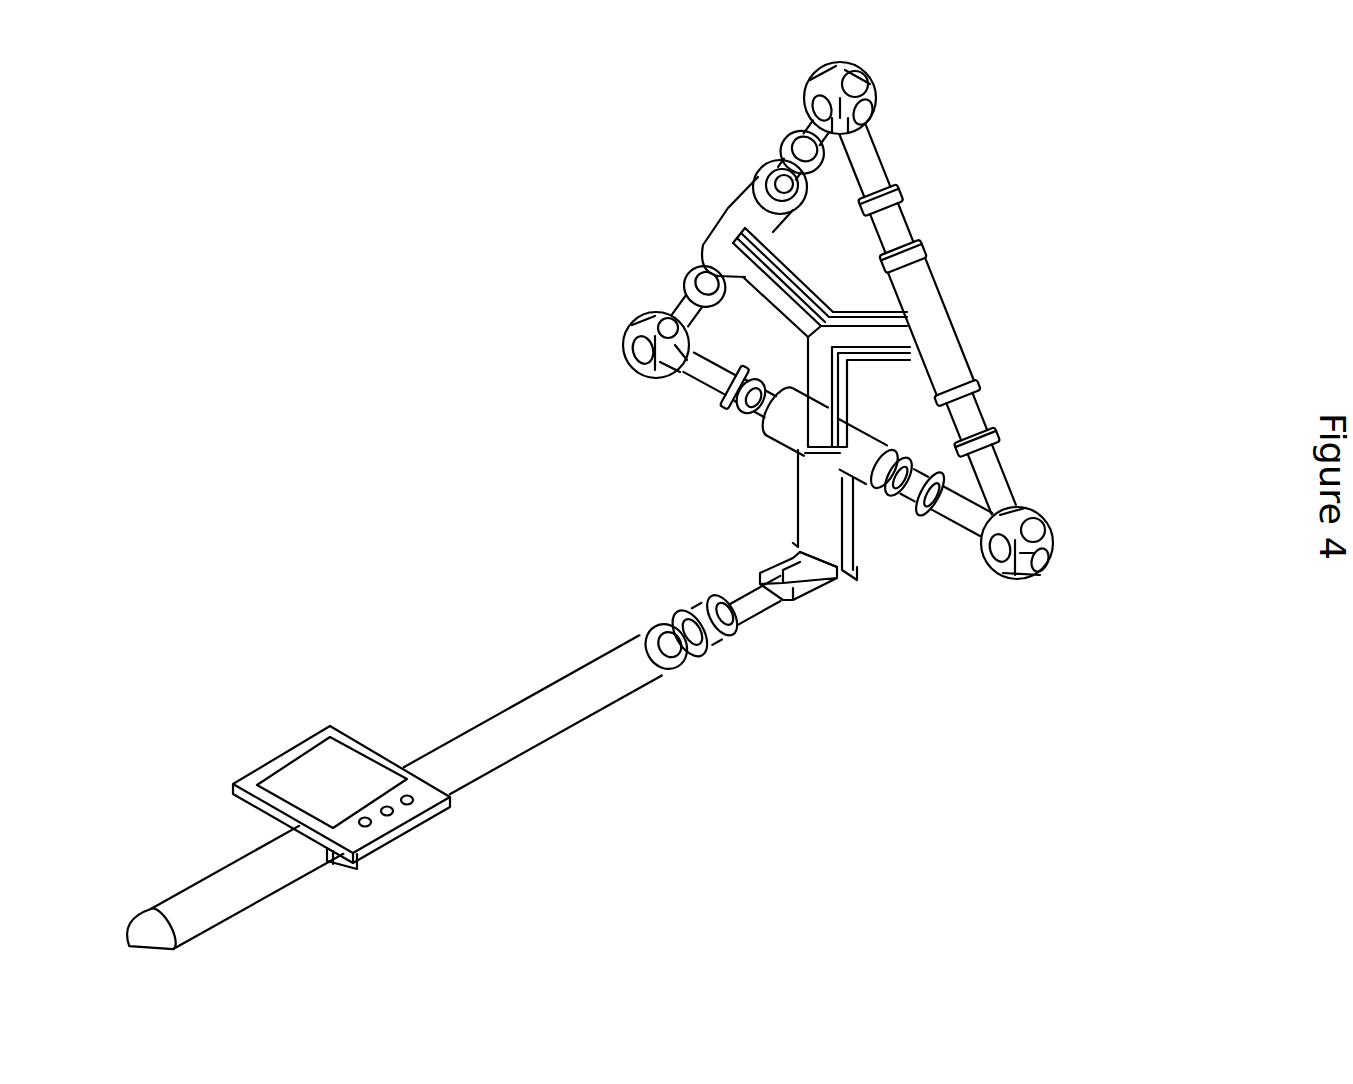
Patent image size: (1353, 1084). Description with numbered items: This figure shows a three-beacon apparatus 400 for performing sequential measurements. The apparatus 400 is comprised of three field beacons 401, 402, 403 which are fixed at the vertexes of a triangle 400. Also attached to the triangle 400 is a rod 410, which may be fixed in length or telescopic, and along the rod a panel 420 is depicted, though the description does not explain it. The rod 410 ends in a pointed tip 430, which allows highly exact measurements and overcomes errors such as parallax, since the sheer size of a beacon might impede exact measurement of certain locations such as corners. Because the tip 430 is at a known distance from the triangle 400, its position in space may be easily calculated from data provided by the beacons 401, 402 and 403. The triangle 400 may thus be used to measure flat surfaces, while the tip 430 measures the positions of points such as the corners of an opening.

The apparatus 400 is at (780, 346).
The field beacon 401 is at (624, 345).
The field beacon 402 is at (807, 98).
The field beacon 403 is at (985, 544).
The rod 410 is at (493, 751).
The display 420 is at (336, 785).
The pointed tip 430 is at (121, 936).